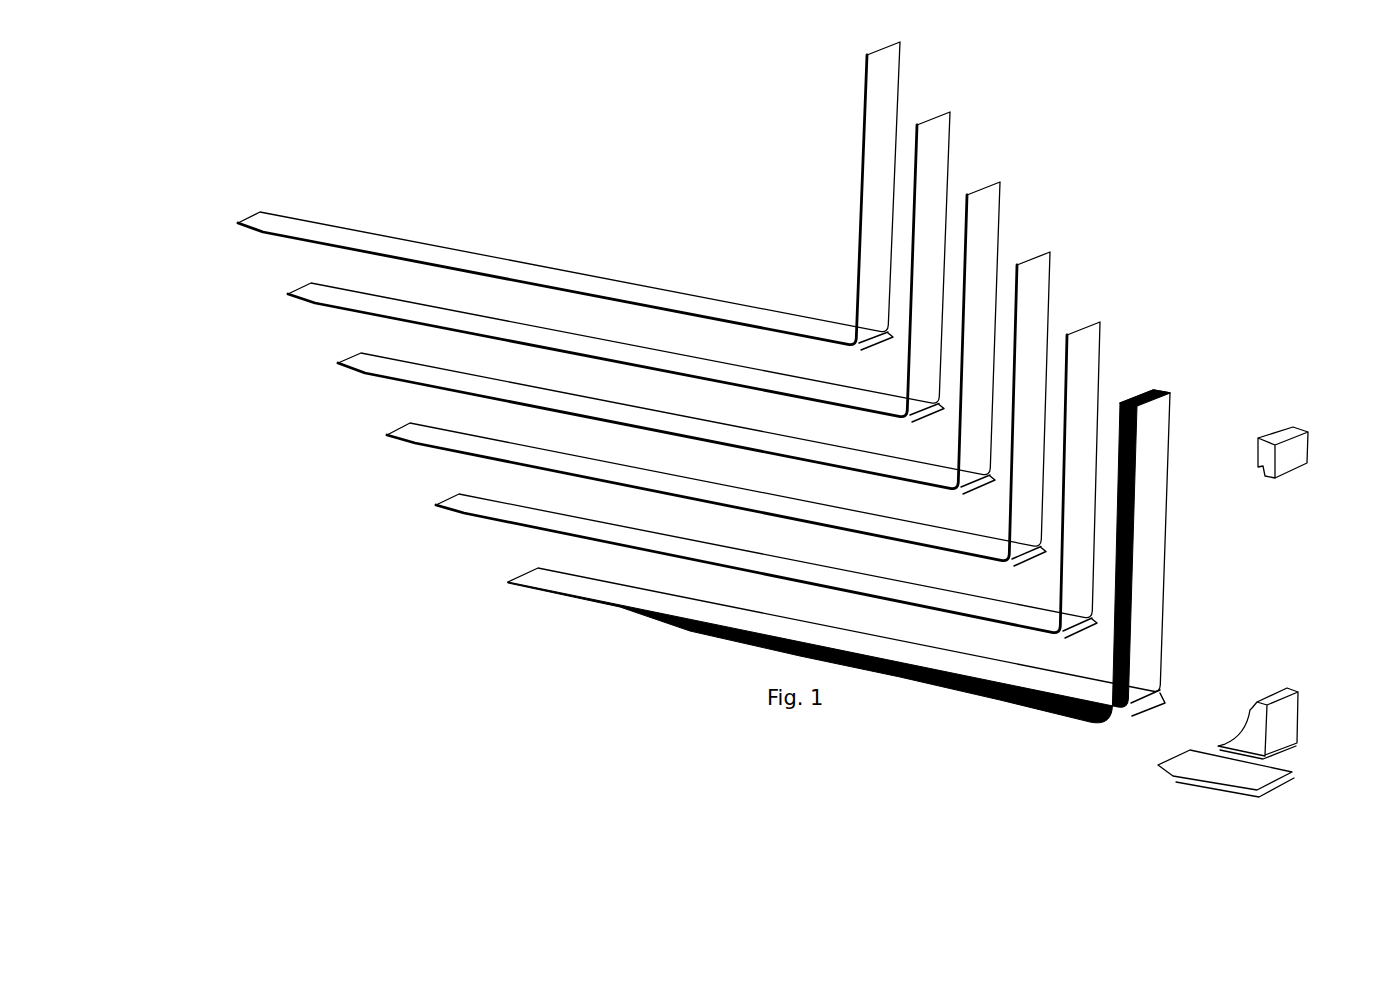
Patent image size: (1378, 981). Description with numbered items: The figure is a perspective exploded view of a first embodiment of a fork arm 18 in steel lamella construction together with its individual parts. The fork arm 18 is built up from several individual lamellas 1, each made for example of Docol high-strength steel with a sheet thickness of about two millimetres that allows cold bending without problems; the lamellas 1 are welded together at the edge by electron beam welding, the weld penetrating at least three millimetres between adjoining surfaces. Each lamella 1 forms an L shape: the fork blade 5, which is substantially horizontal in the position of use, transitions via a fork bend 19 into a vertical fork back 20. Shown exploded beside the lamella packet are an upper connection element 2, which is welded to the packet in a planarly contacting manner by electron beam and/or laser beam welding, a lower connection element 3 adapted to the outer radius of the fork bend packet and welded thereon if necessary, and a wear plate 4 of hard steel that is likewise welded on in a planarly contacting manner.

The lamella 1 is at (476, 507).
The upper connection element 2 is at (1290, 433).
The lower connection element 3 is at (1288, 707).
The wear plate 4 is at (1203, 762).
The fork blade 5 is at (617, 595).
The fork arm 18 is at (1070, 685).
The fork bend 19 is at (1143, 698).
The fork back 20 is at (1148, 590).